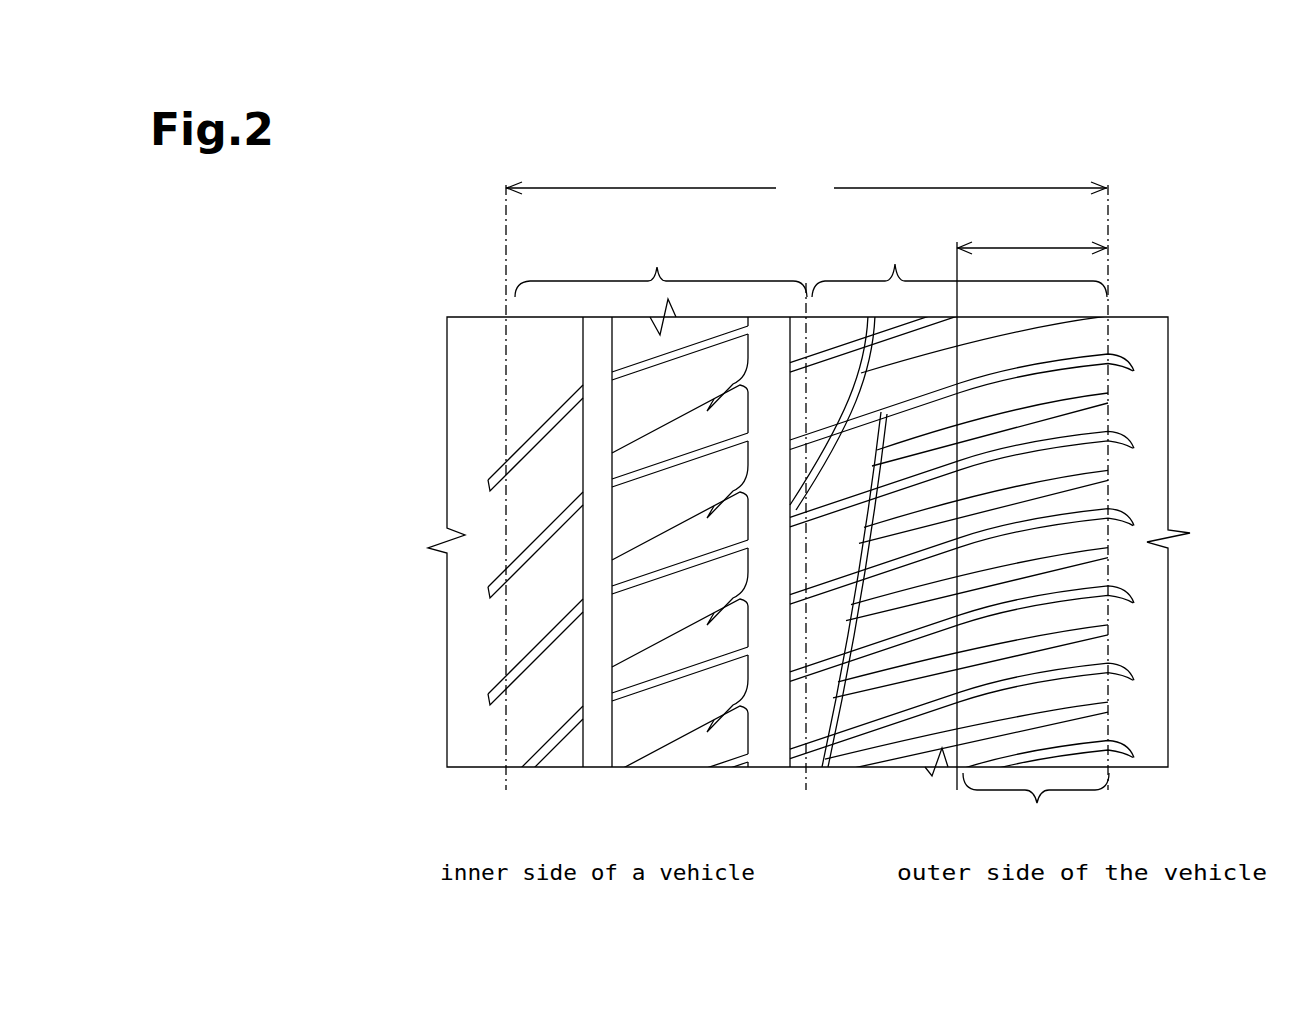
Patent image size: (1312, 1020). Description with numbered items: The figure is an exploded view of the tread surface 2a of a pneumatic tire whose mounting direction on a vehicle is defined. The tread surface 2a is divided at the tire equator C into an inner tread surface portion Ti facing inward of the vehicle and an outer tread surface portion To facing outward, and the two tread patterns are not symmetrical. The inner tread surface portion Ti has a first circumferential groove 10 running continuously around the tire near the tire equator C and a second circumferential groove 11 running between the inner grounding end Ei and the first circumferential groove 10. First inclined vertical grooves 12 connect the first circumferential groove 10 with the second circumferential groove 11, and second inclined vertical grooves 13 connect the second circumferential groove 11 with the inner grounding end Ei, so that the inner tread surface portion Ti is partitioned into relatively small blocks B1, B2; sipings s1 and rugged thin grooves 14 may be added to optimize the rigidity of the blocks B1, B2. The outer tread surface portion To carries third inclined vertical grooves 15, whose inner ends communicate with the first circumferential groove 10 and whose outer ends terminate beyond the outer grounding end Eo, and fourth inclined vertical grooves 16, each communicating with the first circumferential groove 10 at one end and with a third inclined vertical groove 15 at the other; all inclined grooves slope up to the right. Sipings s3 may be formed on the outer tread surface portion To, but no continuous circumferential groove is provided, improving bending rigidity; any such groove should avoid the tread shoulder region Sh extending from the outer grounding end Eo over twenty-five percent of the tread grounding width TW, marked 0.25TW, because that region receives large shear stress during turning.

The tread surface 2a is at (532, 316).
The first circumferential groove 10 is at (766, 752).
The second circumferential groove 11 is at (595, 760).
The first inclined vertical grooves 12 is at (642, 583).
The second inclined vertical grooves 13 is at (530, 673).
The rugged thin grooves 14 is at (717, 393).
The third inclined vertical grooves 15 is at (1043, 603).
The fourth inclined vertical grooves 16 is at (856, 714).
The sipings s1 is at (646, 439).
The sipings s3 is at (1080, 548).
The block B1 is at (672, 758).
The block B2 is at (530, 581).
The inner grounding end Ei is at (503, 222).
The outer grounding end Eo is at (1110, 215).
The tire equator C is at (802, 523).
The tread grounding width TW is at (806, 191).
The 25% of the tread grounding width 0.25TW is at (1032, 505).
The inner tread surface portion Ti is at (661, 266).
The outer tread surface portion To is at (959, 268).
The tread shoulder region Sh is at (1036, 804).